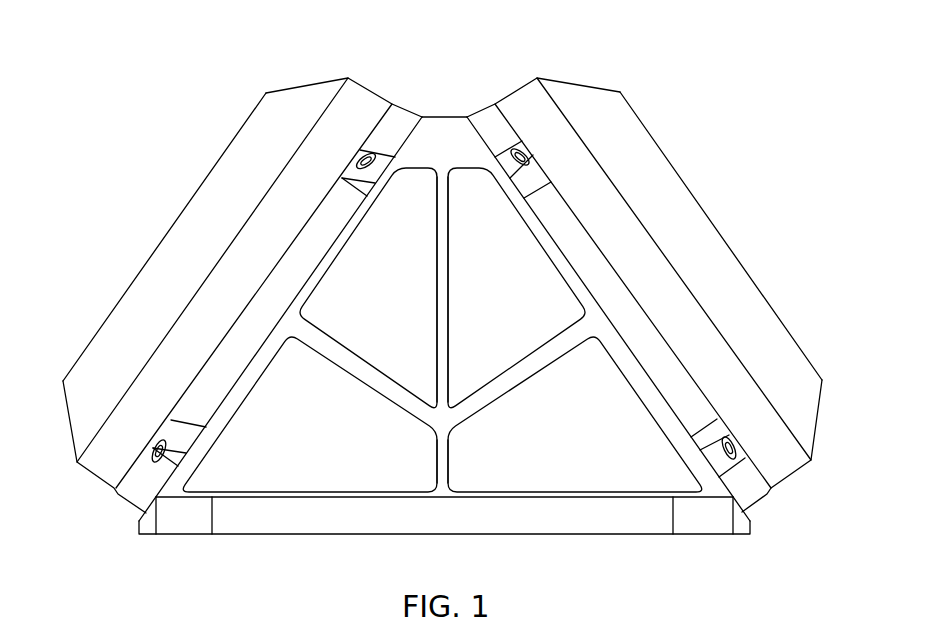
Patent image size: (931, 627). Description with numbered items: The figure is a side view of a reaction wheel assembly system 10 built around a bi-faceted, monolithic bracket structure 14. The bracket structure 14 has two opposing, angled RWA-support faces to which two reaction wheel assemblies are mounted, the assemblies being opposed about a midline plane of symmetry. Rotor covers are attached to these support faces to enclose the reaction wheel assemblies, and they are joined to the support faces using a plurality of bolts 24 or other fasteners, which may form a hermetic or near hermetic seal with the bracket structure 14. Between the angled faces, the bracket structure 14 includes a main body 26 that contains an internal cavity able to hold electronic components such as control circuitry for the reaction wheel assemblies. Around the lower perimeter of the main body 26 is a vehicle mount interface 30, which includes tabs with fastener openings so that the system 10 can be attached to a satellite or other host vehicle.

The RWA system 10 is at (440, 318).
The multi-faceted bracket structure 14 is at (444, 319).
The bolts 24 is at (360, 155).
The main body 26 is at (458, 311).
The vehicle mount interface 30 is at (185, 535).